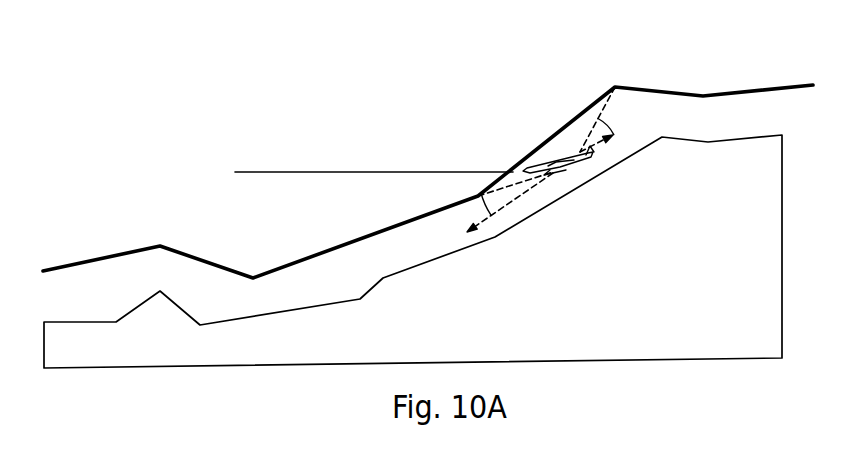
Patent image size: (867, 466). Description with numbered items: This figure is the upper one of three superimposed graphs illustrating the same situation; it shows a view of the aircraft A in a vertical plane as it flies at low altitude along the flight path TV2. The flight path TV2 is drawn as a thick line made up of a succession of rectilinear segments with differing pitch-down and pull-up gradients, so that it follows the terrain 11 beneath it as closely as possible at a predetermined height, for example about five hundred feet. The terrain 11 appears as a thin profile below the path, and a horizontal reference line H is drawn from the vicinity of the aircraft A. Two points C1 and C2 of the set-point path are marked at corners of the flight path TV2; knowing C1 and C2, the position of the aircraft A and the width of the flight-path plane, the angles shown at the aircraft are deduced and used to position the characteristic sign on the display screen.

The flight path TV2 is at (716, 80).
The horizontal reference line H is at (358, 171).
The terrain 11 is at (257, 317).
The aircraft A is at (561, 174).
The element C1 is at (603, 106).
The element C2 is at (499, 186).